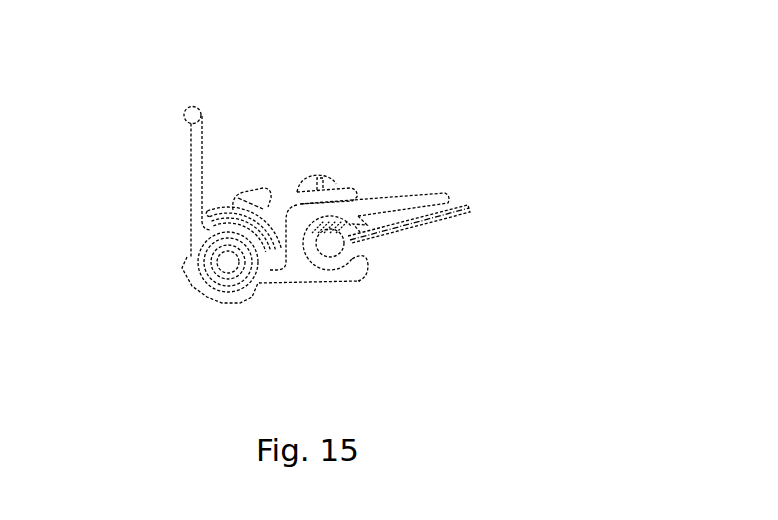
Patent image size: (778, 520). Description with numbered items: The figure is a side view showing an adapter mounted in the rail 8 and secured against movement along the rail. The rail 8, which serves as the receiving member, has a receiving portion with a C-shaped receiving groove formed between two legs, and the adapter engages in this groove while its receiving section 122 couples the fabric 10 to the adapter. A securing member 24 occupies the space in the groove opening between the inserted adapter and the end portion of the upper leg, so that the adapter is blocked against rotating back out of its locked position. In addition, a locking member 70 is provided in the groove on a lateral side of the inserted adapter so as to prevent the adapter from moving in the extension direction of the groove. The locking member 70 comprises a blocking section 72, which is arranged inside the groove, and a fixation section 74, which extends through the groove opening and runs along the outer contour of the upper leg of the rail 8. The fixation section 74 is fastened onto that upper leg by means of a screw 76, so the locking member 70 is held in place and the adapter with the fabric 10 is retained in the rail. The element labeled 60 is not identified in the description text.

The rail 8 is at (157, 183).
The fabric 10 is at (440, 226).
The securing member 24 is at (295, 206).
The clip 60 is at (338, 181).
The locking member 70 is at (196, 255).
The blocking section 72 is at (230, 268).
The fixation section 74 is at (225, 208).
The screw 76 is at (250, 194).
The receiving section 122 is at (366, 296).